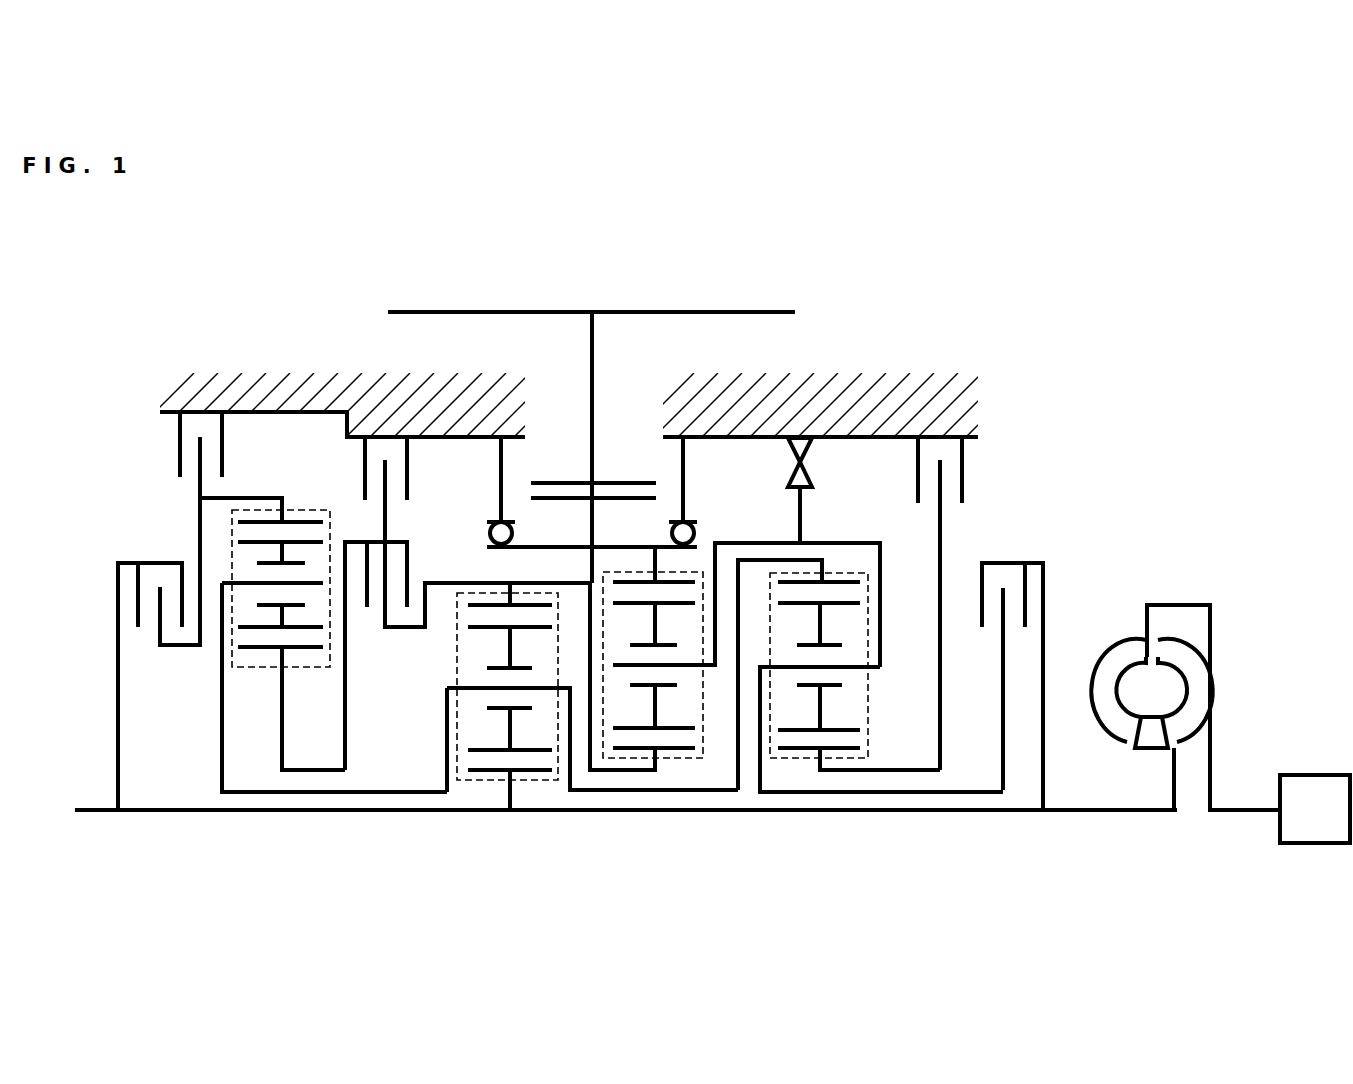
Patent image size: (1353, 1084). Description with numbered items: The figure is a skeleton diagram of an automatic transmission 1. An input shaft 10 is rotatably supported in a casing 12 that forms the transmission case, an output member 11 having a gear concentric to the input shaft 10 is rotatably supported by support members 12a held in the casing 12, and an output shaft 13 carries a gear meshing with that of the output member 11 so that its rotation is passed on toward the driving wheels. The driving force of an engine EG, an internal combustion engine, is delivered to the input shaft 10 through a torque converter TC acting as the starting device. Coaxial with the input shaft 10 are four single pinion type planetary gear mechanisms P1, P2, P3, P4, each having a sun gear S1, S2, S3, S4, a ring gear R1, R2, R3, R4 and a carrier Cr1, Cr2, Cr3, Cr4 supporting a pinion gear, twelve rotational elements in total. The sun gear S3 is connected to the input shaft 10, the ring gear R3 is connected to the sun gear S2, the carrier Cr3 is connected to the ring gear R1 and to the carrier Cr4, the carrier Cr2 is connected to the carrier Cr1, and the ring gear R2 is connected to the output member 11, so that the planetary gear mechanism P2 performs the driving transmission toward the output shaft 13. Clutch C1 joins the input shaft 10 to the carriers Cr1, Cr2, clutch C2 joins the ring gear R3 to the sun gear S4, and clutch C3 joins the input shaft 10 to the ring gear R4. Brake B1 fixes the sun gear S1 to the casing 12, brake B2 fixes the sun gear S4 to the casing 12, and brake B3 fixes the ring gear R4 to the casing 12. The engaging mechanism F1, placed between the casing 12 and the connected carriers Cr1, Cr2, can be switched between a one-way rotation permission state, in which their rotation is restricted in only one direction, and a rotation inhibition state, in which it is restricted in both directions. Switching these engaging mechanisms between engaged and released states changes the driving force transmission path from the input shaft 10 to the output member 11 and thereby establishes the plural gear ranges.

The automatic transmission 1 is at (1125, 343).
The input shaft 10 is at (905, 815).
The output member 11 is at (597, 540).
The casing 12 is at (455, 378).
The support members 12a is at (498, 455).
The output shaft 13 is at (530, 311).
The brake B1 is at (984, 465).
The brake B2 is at (345, 465).
The brake B3 is at (170, 462).
The clutch C1 is at (1066, 593).
The clutch C2 is at (425, 556).
The clutch C3 is at (155, 660).
The engaging mechanism F1 is at (814, 470).
The ring gear R1 is at (862, 582).
The ring gear R2 is at (690, 583).
The ring gear R3 is at (490, 600).
The ring gear R4 is at (308, 518).
The sun gear S1 is at (862, 748).
The sun gear S2 is at (662, 750).
The sun gear S3 is at (540, 772).
The sun gear S4 is at (312, 648).
The planetary gear mechanism P1 is at (868, 705).
The planetary gear mechanism P2 is at (695, 760).
The planetary gear mechanism P3 is at (465, 782).
The planetary gear mechanism P4 is at (247, 667).
The carrier Cr1 is at (880, 666).
The carrier Cr2 is at (693, 668).
The carrier Cr3 is at (462, 688).
The carrier Cr4 is at (317, 582).
The torque converter TC is at (1112, 742).
The engine EG is at (1248, 724).